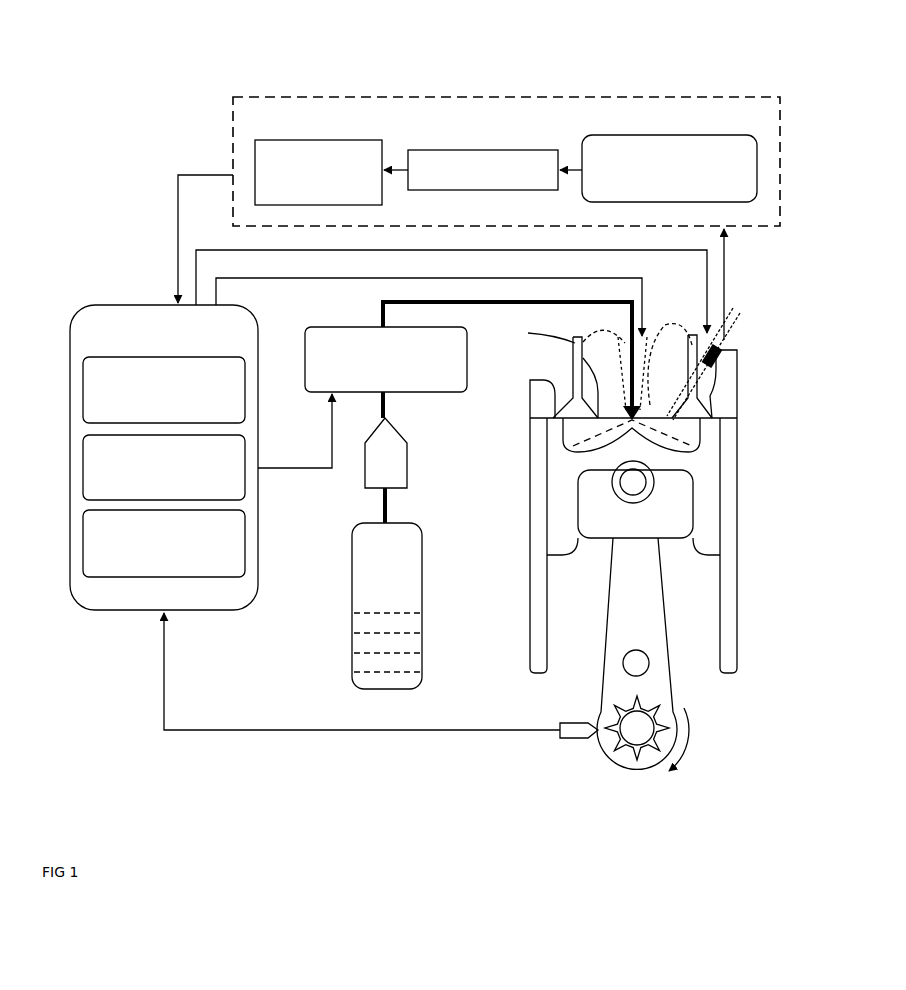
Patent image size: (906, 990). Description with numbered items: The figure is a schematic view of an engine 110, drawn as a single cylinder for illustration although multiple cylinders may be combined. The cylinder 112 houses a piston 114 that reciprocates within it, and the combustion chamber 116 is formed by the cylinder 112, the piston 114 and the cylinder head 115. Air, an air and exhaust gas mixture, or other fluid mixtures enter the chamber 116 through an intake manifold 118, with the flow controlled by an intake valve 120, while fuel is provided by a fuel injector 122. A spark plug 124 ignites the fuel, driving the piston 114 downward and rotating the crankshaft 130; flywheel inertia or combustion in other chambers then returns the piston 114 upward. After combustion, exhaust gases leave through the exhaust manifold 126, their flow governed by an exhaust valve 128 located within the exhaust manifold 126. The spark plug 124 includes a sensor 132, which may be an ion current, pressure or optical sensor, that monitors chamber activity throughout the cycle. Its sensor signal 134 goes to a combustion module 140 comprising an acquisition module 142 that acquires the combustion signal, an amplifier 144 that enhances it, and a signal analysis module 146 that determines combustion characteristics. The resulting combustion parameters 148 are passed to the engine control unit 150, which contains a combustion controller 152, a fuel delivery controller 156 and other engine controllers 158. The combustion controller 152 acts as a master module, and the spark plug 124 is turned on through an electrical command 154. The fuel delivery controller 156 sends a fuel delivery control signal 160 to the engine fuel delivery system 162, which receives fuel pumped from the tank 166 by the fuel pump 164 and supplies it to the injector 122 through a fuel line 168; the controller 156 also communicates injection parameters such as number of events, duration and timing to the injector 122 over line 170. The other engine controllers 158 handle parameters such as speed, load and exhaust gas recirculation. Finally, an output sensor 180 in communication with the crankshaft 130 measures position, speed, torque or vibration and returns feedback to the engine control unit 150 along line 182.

The engine 110 is at (500, 77).
The cylinder 112 is at (743, 613).
The piston 114 is at (702, 454).
The cylinder head 115 is at (599, 343).
The combustion chamber 116 is at (687, 428).
The intake manifold 118 is at (543, 348).
The intake valve 120 is at (568, 388).
The fuel injector 122 is at (644, 365).
The spark plug 124 is at (724, 345).
The exhaust manifold 126 is at (720, 390).
The exhaust valve 128 is at (689, 331).
The crankshaft 130 is at (649, 698).
The sensor 132 is at (704, 370).
The sensor signal 134 is at (729, 248).
The combustion module 140 is at (757, 96).
The acquisition module 142 is at (715, 134).
The amplifier 144 is at (435, 147).
The signal analysis module 146 is at (308, 136).
The combustion parameters 148 is at (179, 170).
The engine control unit 150 is at (125, 303).
The combustion controller 152 is at (80, 396).
The electrical command 154 is at (226, 246).
The fuel delivery controller 156 is at (80, 469).
The other engine controllers 158 is at (80, 547).
The fuel delivery control signal 160 is at (317, 474).
The engine fuel delivery system 162 is at (312, 396).
The fuel pump 164 is at (409, 464).
The fuel tank 166 is at (349, 575).
The fuel line 168 is at (380, 305).
The injection control line 170 is at (245, 284).
The output sensor 180 is at (565, 740).
The feedback signal line 182 is at (318, 740).